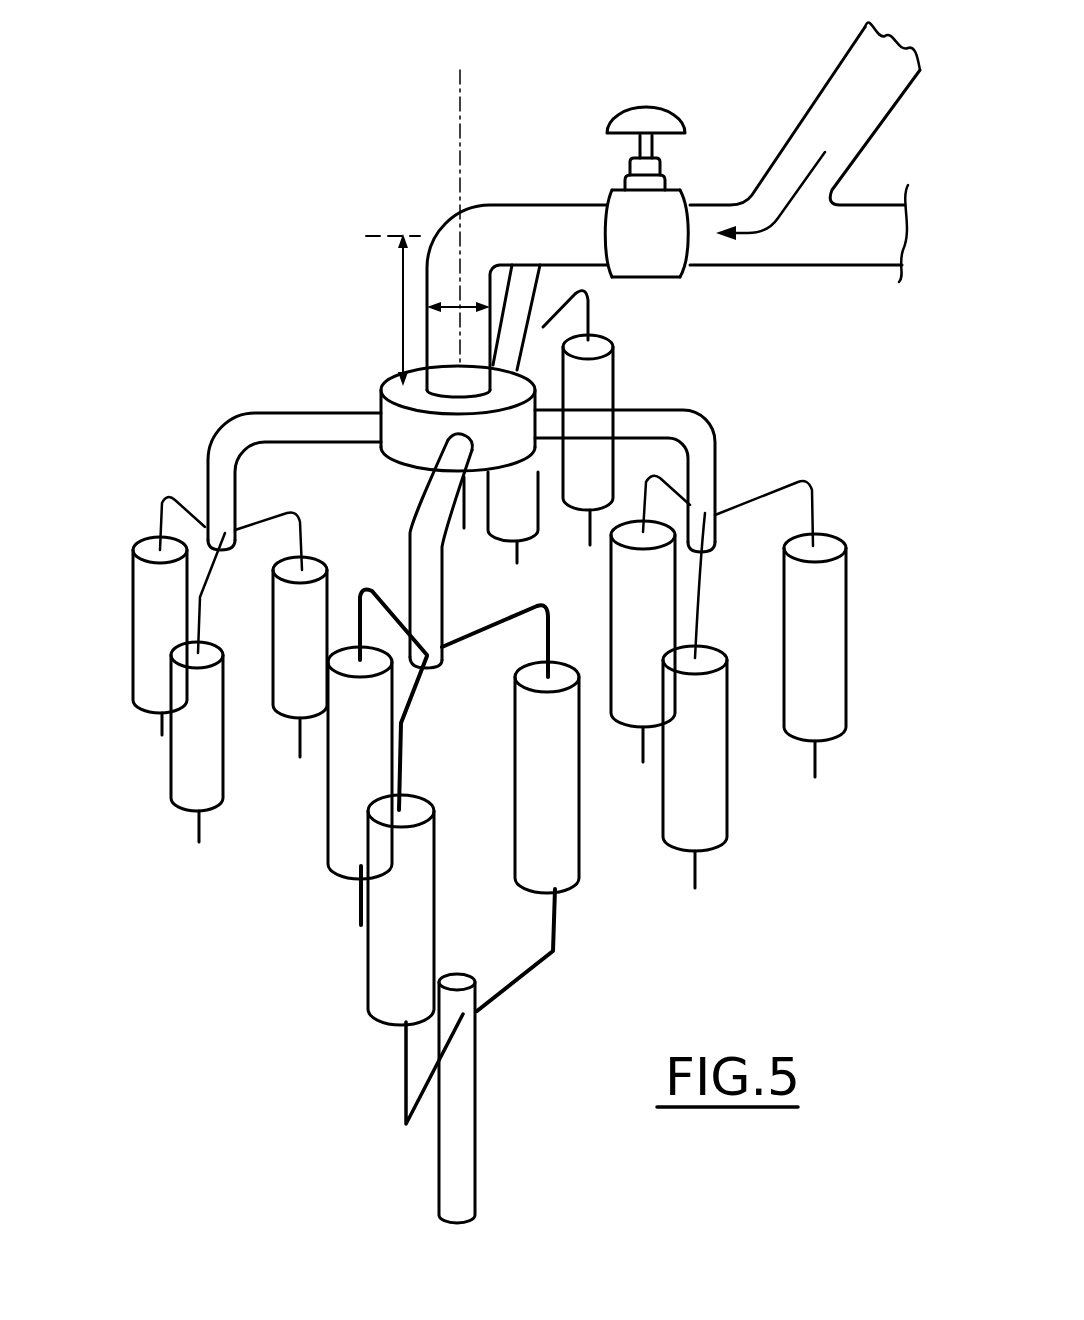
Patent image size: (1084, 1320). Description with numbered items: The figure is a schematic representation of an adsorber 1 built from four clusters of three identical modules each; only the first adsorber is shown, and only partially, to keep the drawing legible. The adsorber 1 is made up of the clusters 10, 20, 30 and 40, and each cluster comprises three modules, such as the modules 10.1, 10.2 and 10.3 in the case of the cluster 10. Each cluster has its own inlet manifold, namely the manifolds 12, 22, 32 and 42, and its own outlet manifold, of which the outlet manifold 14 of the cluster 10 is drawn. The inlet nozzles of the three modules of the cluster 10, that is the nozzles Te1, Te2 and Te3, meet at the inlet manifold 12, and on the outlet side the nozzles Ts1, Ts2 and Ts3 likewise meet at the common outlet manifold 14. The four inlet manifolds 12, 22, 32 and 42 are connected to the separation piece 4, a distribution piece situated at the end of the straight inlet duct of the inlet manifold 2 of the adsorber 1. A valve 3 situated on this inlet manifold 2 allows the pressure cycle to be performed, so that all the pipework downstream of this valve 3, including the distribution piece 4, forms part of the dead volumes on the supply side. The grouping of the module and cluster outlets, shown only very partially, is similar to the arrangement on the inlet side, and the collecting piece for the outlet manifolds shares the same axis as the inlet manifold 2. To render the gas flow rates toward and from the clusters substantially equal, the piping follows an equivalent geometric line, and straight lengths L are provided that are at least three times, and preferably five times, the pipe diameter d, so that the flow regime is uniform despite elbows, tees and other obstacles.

The adsorber 1 is at (205, 292).
The inlet manifold 2 is at (466, 232).
The valve 3 is at (645, 104).
The separation piece 4 is at (390, 384).
The cluster 10 is at (377, 978).
The module 10.1 is at (429, 953).
The module 10.2 is at (577, 813).
The module 10.3 is at (388, 761).
The inlet manifold 12 is at (432, 586).
The outlet manifold 14 is at (465, 1149).
The cluster 20 is at (833, 618).
The inlet manifold 22 is at (695, 436).
The cluster 30 is at (617, 372).
The inlet manifold 32 is at (500, 320).
The cluster 40 is at (142, 685).
The inlet manifold 42 is at (292, 428).
The inlet nozzle Te1 is at (405, 726).
The inlet nozzle Te2 is at (540, 636).
The inlet nozzle Te3 is at (382, 590).
The outlet nozzle Ts1 is at (401, 1074).
The outlet nozzle Ts2 is at (523, 982).
The outlet nozzle Ts3 is at (355, 888).
The straight length L is at (393, 310).
The diameter d is at (458, 296).